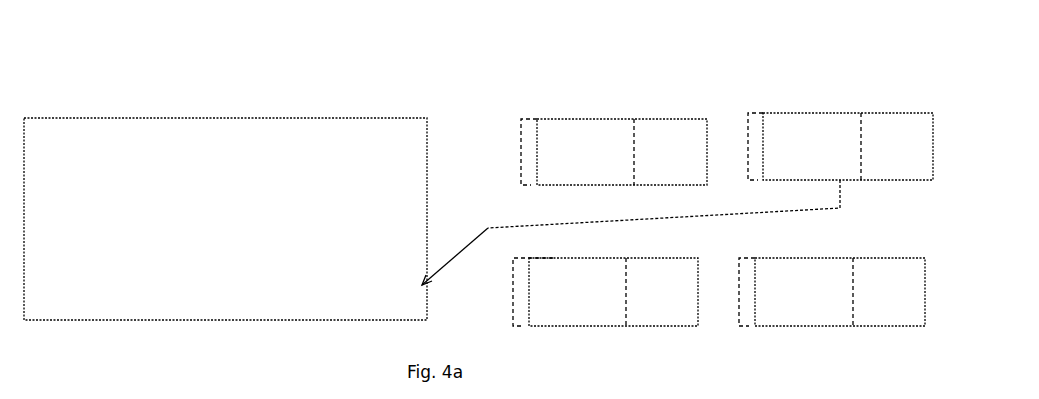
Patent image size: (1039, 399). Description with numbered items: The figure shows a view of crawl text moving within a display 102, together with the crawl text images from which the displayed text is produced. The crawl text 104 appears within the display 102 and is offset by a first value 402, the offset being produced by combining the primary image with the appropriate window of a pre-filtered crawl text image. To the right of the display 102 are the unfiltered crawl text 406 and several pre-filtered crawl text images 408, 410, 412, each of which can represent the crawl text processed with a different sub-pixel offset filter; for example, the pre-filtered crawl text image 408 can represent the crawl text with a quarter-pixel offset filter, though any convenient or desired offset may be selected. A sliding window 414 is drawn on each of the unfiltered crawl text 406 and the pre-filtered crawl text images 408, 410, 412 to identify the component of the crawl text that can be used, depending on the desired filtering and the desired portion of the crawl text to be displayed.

The display 102 is at (427, 118).
The crawl text 104 is at (394, 287).
The first value 402 is at (243, 300).
The unfiltered crawl text 406 is at (682, 118).
The pre-filtered crawl text image 408 is at (907, 112).
The pre-filtered crawl text image 410 is at (673, 258).
The pre-filtered crawl text image 412 is at (898, 258).
The sliding window 414 is at (526, 113).